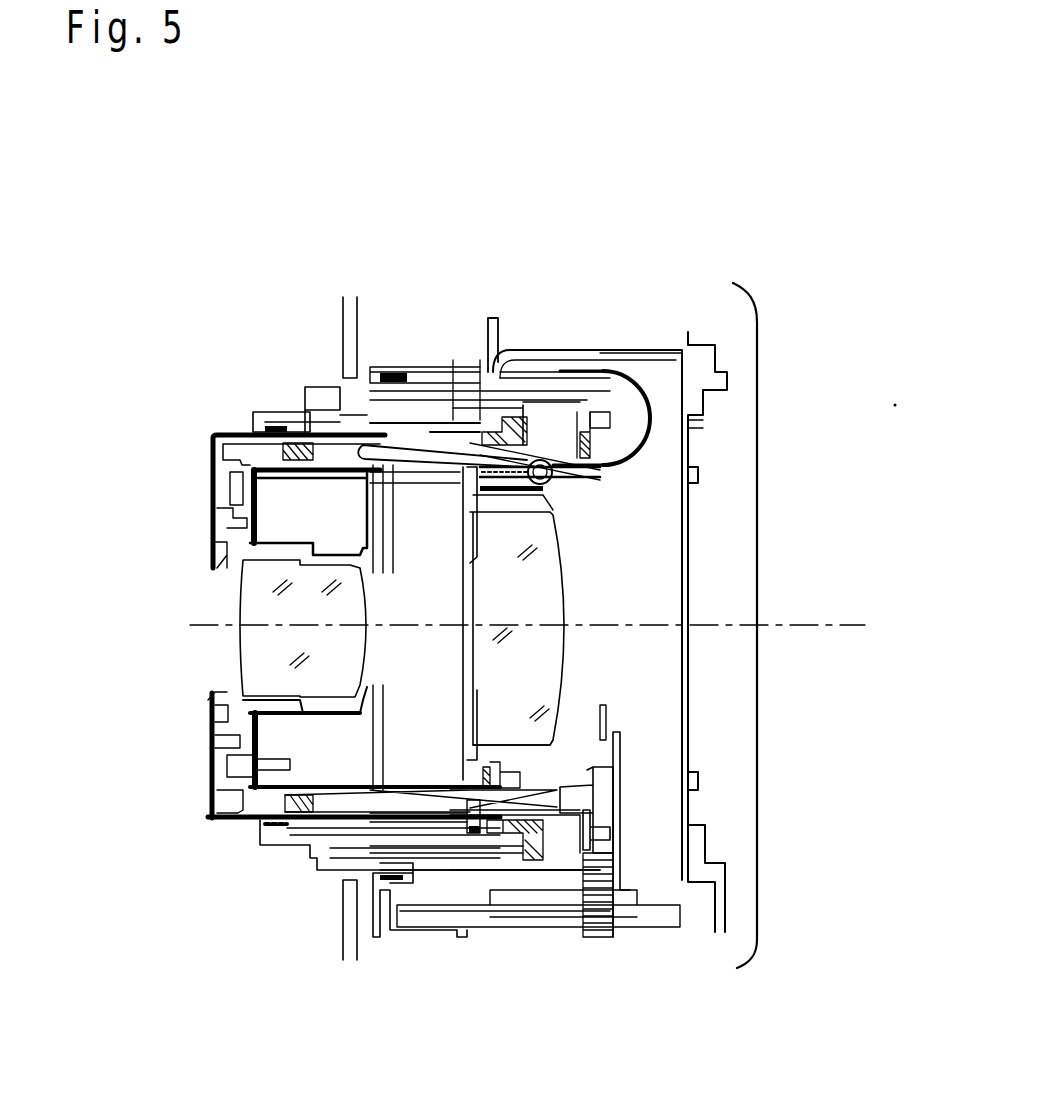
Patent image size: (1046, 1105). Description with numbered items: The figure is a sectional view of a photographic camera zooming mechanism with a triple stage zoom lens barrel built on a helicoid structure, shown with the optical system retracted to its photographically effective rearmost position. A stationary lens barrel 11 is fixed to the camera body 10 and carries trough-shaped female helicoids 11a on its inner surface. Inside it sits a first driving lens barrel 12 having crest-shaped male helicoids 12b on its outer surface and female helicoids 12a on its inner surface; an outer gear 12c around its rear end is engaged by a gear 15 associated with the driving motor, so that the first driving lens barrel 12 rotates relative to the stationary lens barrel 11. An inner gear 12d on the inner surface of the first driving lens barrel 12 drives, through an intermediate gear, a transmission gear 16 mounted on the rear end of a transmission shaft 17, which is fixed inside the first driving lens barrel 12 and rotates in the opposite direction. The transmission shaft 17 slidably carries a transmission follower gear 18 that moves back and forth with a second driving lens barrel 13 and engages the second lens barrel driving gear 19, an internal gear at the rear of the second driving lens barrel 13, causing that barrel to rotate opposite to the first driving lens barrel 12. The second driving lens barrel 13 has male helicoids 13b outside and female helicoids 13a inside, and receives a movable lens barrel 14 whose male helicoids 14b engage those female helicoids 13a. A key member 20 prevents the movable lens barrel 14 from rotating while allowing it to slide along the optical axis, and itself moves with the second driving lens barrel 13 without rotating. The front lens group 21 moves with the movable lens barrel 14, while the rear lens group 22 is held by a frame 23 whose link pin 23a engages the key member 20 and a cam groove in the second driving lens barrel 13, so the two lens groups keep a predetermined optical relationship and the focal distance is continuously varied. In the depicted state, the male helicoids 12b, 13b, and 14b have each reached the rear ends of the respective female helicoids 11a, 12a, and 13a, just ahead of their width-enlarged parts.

The camera body 10 is at (672, 342).
The stationary lens barrel 11 is at (441, 408).
The female helicoids 11a is at (420, 365).
The first driving lens barrel 12 is at (498, 398).
The female helicoids 12a is at (365, 440).
The male helicoids 12b is at (540, 408).
The outer gear 12c is at (597, 390).
The inner gear 12d is at (608, 422).
The second driving lens barrel 13 is at (270, 410).
The female helicoids 13a is at (458, 415).
The male helicoids 13b is at (478, 405).
The movable lens barrel 14 is at (238, 433).
The male helicoids 14b is at (402, 443).
The gear 15 is at (603, 903).
The transmission gear 16 is at (607, 775).
The transmission shaft 17 is at (560, 790).
The transmission follower gear 18 is at (498, 813).
The second lens barrel driving gear 19 is at (540, 467).
The key member 20 is at (243, 816).
The front lens group 21 is at (262, 657).
The rear lens group 22 is at (548, 593).
The frame 23 is at (462, 722).
The link pin 23a is at (468, 812).